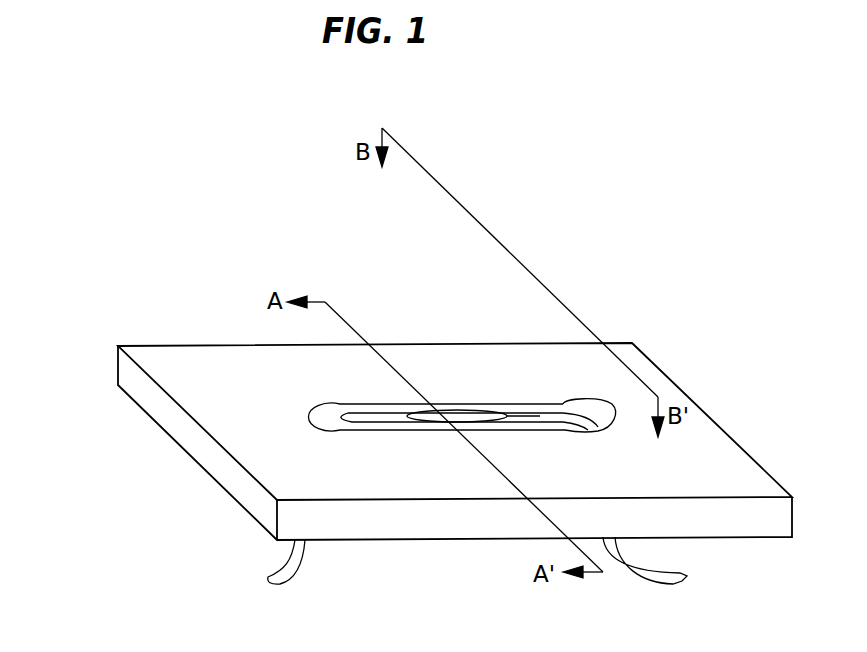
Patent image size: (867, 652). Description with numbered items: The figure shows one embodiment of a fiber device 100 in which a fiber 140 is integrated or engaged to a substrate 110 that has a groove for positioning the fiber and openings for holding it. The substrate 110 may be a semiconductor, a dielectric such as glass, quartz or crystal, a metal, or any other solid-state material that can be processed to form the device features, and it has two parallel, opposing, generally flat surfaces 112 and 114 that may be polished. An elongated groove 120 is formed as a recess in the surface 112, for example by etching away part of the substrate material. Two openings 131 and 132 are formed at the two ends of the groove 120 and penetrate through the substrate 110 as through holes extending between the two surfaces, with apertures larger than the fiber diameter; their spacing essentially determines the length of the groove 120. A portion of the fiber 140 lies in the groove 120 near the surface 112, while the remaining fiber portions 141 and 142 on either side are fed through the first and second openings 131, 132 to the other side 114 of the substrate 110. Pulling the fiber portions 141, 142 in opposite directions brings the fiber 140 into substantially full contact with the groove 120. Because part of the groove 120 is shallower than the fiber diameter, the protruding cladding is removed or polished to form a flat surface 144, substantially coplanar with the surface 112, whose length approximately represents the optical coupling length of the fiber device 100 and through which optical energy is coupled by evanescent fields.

The fiber device 100 is at (192, 207).
The substrate 110 is at (127, 373).
The substrate surface 112 is at (163, 362).
The substrate surface 114 is at (150, 420).
The elongated groove 120 is at (403, 403).
The first opening 131 is at (313, 420).
The second opening 132 is at (608, 417).
The fiber 140 is at (543, 417).
The fiber portion 141 is at (298, 570).
The fiber portion 142 is at (670, 580).
The flat surface 144 is at (467, 417).